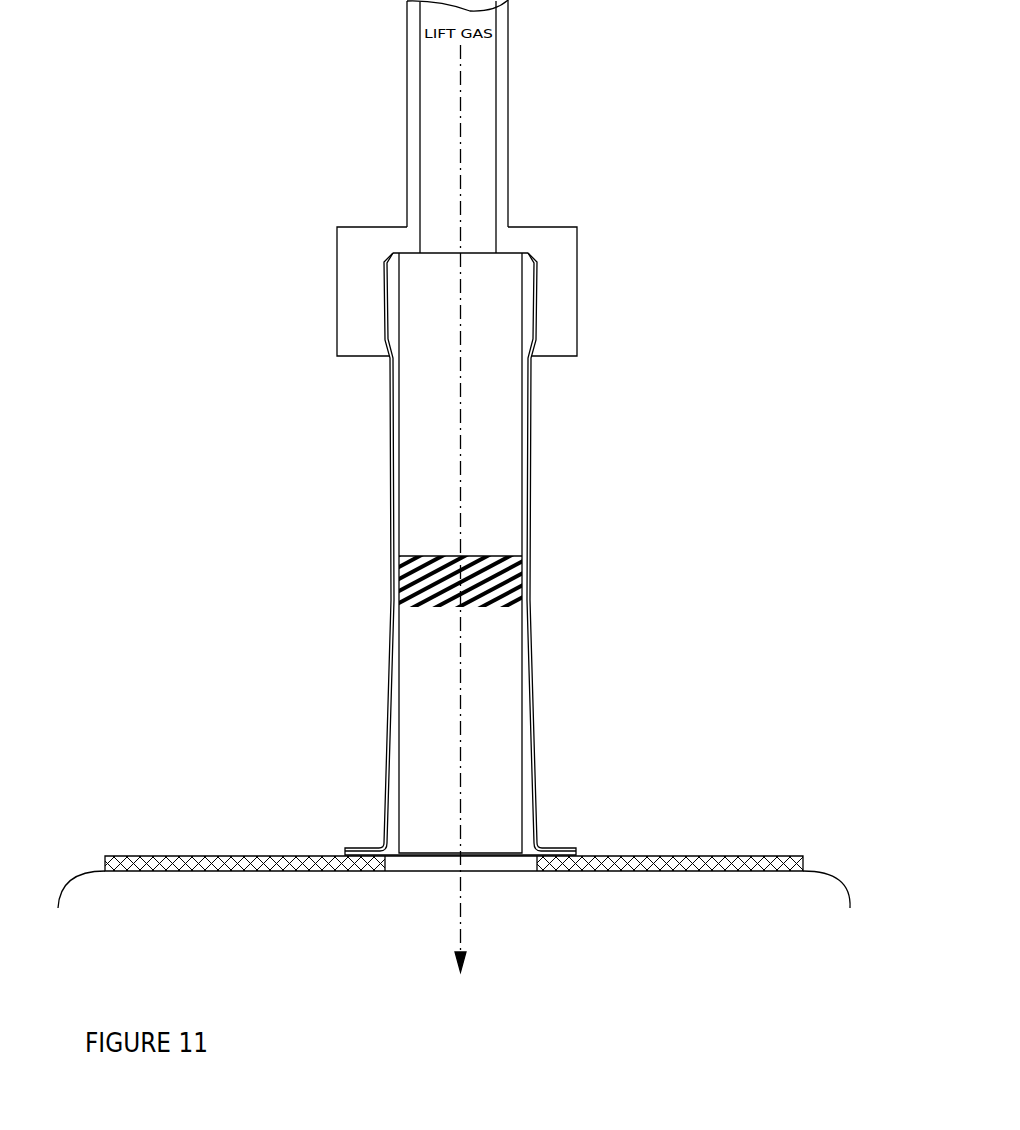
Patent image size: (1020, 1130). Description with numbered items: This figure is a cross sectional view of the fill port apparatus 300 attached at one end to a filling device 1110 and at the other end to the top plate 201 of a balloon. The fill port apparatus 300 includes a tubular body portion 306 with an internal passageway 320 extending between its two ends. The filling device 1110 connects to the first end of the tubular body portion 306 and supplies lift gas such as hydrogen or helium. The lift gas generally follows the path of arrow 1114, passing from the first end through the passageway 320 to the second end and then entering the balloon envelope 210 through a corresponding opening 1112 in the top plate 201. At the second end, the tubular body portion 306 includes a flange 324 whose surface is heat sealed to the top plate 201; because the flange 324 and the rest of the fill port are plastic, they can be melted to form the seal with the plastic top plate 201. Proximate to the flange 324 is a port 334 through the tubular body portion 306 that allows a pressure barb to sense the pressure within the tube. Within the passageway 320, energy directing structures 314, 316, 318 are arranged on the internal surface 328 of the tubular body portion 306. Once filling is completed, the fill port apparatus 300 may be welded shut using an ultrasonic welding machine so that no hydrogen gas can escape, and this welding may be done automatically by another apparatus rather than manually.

The fill port apparatus 300 is at (277, 450).
The tubular body portion 306 is at (391, 430).
The internal passageway 320 is at (493, 372).
The energy directing structure 318 is at (446, 556).
The energy directing structure 316 is at (474, 556).
The energy directing structure 314 is at (497, 556).
The filling device 1110 is at (580, 300).
The internal surface 328 is at (421, 647).
The port 334 is at (391, 727).
The arrow 1114 is at (458, 792).
The flange 324 is at (345, 852).
The balloon envelope 210 is at (458, 882).
The top plate 201 is at (158, 872).
The opening 1112 is at (418, 862).